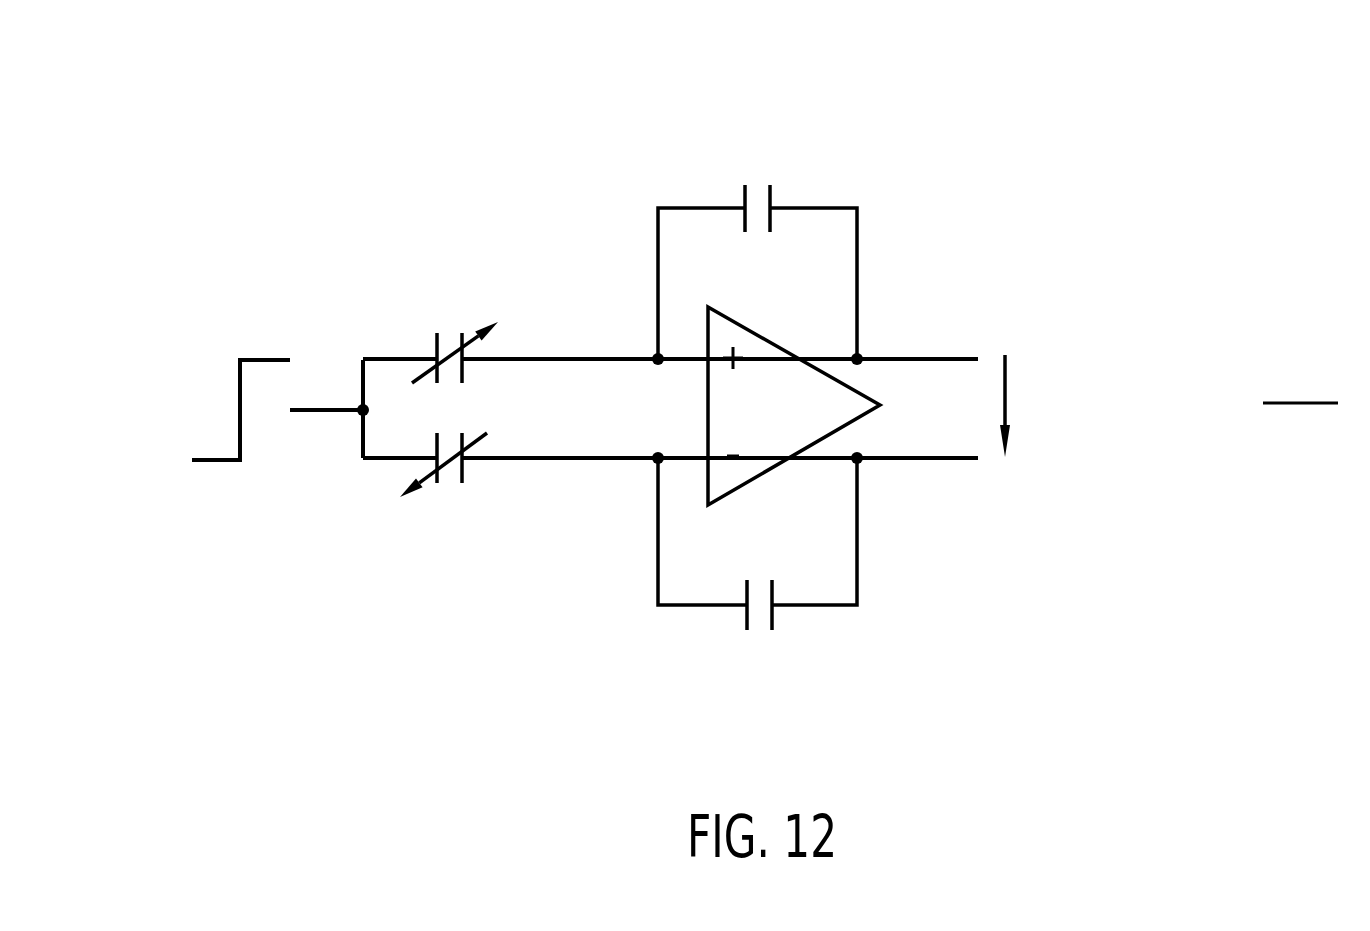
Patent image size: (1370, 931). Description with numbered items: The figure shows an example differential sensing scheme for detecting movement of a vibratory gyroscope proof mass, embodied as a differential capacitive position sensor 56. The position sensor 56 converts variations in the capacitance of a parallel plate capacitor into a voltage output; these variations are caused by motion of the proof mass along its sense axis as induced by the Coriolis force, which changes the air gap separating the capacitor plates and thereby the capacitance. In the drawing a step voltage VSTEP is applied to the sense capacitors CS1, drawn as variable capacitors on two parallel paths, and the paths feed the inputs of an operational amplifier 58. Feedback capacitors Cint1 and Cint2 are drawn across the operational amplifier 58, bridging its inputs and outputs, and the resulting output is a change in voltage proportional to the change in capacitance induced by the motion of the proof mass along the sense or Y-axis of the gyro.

The differential capacitive position sensor 56 is at (956, 135).
The operational amplifier 58 is at (795, 430).
The sense capacitor CS1 is at (449, 407).
The first integration capacitor Cint1 is at (757, 231).
The second integration capacitor Cint2 is at (757, 582).
The step voltage input VSTEP is at (234, 410).